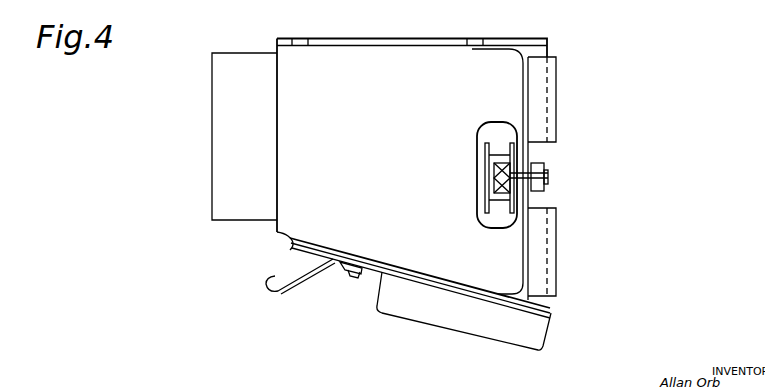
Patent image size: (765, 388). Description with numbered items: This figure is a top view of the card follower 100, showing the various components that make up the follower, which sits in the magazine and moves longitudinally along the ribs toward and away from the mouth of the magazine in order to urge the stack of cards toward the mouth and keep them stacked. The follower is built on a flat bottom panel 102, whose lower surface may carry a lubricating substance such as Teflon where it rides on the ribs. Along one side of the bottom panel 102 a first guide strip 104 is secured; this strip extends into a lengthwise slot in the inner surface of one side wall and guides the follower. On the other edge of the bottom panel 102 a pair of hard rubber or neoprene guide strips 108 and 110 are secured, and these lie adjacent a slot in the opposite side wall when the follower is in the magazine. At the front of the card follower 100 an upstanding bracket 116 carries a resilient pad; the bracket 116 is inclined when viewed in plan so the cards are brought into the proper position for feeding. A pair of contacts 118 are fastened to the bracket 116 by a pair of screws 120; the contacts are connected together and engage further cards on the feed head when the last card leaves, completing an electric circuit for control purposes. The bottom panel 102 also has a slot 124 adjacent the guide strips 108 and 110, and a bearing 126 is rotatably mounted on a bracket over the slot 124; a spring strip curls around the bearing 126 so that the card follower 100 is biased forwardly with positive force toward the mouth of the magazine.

The card follower 100 is at (420, 70).
The flat bottom panel 102 is at (315, 213).
The first guide strip 104 is at (238, 156).
The guide strip 108 is at (552, 127).
The guide strip 110 is at (552, 240).
The upstanding bracket 116 is at (473, 258).
The contacts 118 is at (268, 288).
The screws 120 is at (350, 271).
The slot 124 is at (497, 130).
The bearing 126 is at (502, 205).